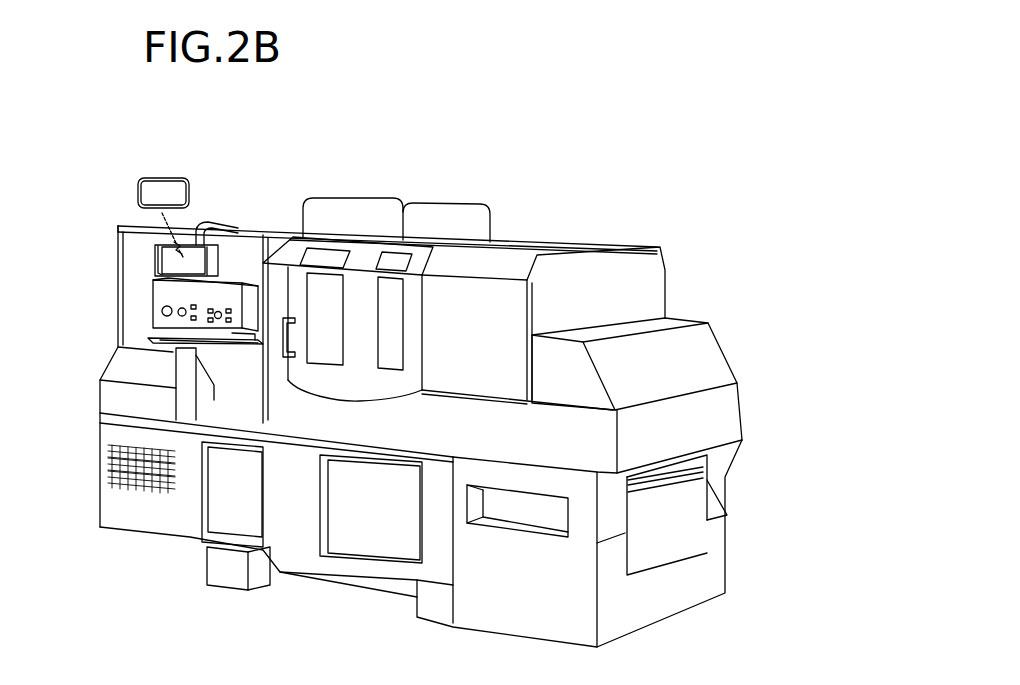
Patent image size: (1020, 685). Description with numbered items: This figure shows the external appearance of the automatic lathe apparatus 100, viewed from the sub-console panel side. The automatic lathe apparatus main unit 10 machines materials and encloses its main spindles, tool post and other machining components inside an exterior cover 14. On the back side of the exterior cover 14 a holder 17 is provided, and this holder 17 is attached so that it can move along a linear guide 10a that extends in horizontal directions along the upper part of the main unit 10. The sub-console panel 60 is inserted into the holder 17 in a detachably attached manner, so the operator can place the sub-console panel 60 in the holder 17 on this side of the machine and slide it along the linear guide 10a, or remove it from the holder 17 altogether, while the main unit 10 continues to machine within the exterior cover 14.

The automatic lathe apparatus 100 is at (641, 210).
The automatic lathe apparatus main unit 10 is at (518, 226).
The linear guide 10a is at (275, 238).
The exterior cover 14 is at (500, 300).
The holder 17 is at (155, 261).
The sub-console panel 60 is at (162, 177).